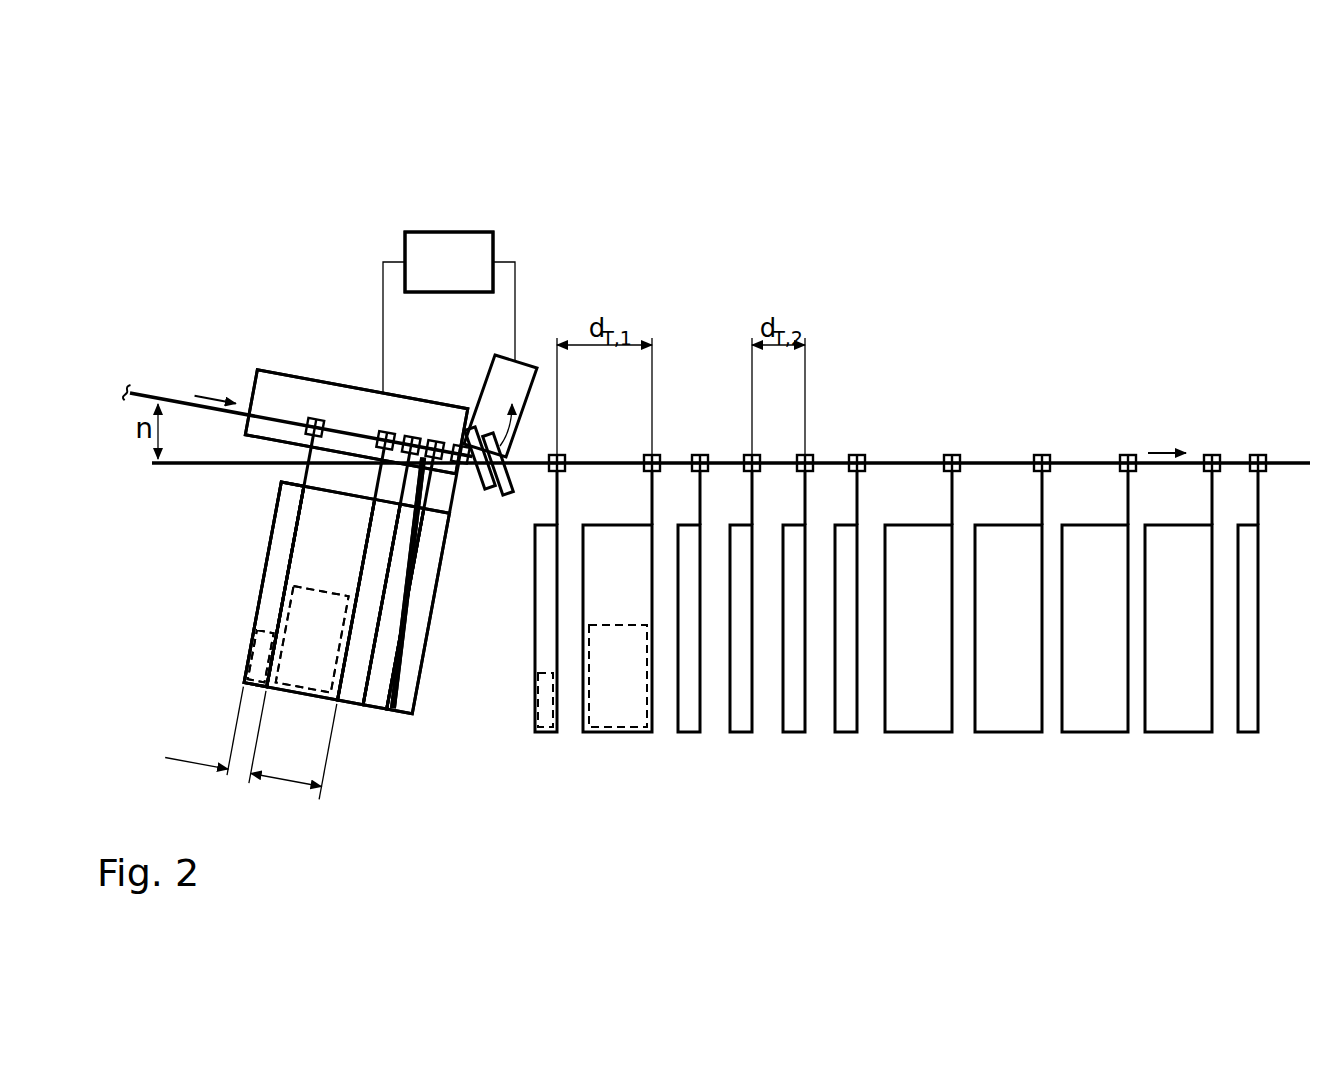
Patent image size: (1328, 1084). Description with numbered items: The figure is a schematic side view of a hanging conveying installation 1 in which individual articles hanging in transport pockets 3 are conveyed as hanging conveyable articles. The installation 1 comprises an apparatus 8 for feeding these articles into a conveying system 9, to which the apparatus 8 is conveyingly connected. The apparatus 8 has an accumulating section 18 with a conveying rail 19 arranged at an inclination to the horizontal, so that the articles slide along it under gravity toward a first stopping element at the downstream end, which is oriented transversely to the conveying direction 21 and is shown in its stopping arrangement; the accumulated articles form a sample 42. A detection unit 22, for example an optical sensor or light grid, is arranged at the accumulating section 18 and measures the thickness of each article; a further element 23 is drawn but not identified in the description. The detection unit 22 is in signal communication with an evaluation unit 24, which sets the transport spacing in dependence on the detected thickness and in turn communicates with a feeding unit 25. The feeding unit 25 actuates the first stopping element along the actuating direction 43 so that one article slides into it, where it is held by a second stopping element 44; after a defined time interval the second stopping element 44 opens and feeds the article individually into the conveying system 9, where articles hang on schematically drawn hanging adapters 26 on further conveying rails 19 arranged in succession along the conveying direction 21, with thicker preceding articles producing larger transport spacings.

The hanging conveying installation 1 is at (754, 196).
The transport pocket 3 is at (283, 609).
The apparatus 8 is at (471, 210).
The conveying system 9 is at (899, 450).
The accumulating section 18 is at (245, 396).
The conveying rail 19 is at (178, 396).
The conveying direction 21 is at (218, 390).
The detection unit 22 is at (323, 382).
The guide 23 is at (277, 383).
The evaluation unit 24 is at (447, 247).
The feeding unit 25 is at (520, 383).
The hanging adapter 26 is at (700, 455).
The sample 42 is at (226, 655).
The actuating direction 43 is at (508, 470).
The second stopping element 44 is at (488, 497).